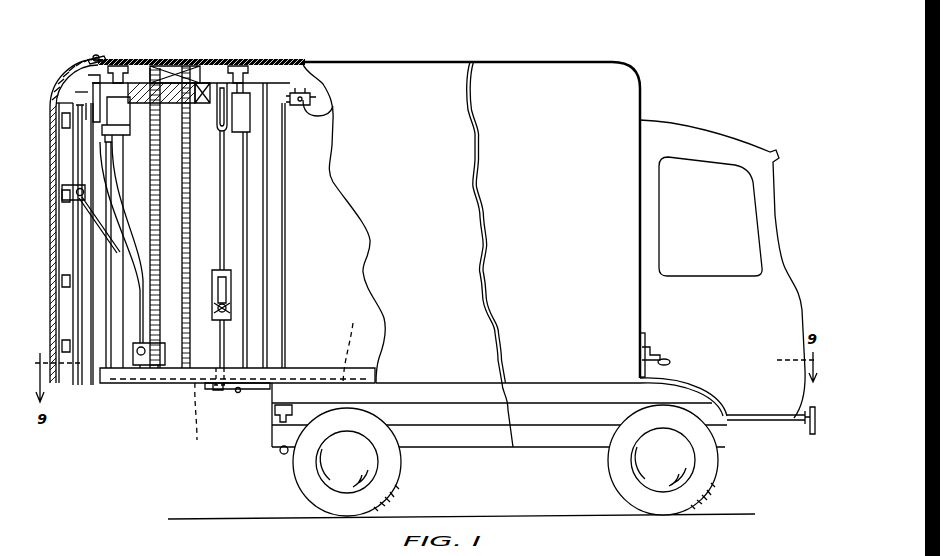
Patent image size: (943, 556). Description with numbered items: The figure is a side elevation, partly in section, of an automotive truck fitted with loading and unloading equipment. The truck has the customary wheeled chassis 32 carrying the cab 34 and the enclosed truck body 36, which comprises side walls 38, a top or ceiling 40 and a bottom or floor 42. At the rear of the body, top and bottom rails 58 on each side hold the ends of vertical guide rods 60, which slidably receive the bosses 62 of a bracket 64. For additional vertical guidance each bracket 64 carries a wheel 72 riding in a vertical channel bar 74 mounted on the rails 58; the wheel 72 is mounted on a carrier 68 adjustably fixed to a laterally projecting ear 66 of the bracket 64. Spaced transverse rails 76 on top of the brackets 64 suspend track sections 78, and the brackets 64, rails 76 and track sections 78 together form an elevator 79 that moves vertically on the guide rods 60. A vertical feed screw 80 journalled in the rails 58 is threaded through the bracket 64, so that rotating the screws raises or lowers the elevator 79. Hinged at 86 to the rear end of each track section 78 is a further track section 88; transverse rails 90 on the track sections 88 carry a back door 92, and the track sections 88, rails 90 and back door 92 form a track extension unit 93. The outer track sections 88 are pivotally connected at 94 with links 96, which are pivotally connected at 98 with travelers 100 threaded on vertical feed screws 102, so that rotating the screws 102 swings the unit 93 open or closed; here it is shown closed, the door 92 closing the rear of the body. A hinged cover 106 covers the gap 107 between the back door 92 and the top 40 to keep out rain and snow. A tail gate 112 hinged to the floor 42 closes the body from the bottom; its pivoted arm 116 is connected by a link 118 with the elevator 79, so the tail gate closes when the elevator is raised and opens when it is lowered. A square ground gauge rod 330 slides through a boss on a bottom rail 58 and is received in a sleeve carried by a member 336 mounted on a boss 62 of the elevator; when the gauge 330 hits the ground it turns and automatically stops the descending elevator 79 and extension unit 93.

The wheeled chassis 32 is at (540, 437).
The cab 34 is at (733, 147).
The truck body 36 is at (500, 76).
The side walls 38 is at (393, 80).
The top or ceiling 40 is at (277, 62).
The floor 42 is at (328, 333).
The top and bottom rails 58 is at (197, 372).
The vertical guide rods 60 is at (123, 216).
The bosses 62 is at (129, 120).
The bracket 64 is at (216, 64).
The laterally projecting ear 66 is at (325, 115).
The carrier 68 is at (293, 112).
The wheel 72 is at (292, 128).
The vertical channel bar 74 is at (270, 186).
The transverse rails 76 is at (184, 66).
The track sections 78 is at (96, 78).
The elevator 79 is at (83, 64).
The vertical feed screw 80 is at (192, 260).
The hinge 86 is at (92, 70).
The track section 88 is at (96, 141).
The rails 90 is at (67, 181).
The back door 92 is at (52, 233).
The track extension unit 93 is at (50, 207).
The pivotal connection 94 is at (78, 205).
The links 96 is at (134, 264).
The pivotal connection 98 is at (141, 361).
The travelers 100 is at (170, 357).
The vertical feed screws 102 is at (160, 271).
The hinged cover 106 is at (66, 70).
The gap 107 is at (75, 92).
The tail gate 112 is at (198, 421).
The pivoted arm 116 is at (218, 353).
The link 118 is at (216, 190).
The ground gauge rod 330 is at (103, 353).
The member 336 is at (110, 137).